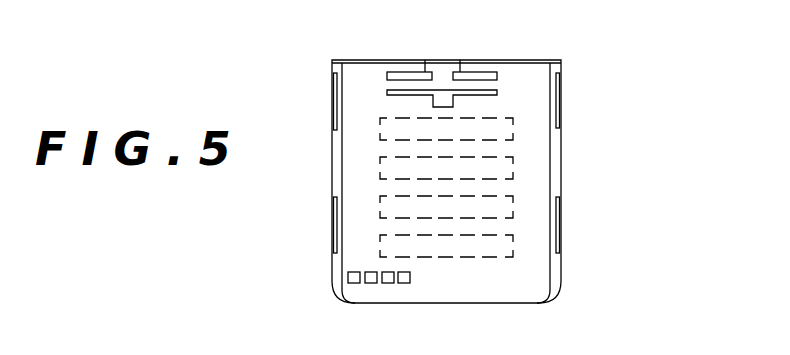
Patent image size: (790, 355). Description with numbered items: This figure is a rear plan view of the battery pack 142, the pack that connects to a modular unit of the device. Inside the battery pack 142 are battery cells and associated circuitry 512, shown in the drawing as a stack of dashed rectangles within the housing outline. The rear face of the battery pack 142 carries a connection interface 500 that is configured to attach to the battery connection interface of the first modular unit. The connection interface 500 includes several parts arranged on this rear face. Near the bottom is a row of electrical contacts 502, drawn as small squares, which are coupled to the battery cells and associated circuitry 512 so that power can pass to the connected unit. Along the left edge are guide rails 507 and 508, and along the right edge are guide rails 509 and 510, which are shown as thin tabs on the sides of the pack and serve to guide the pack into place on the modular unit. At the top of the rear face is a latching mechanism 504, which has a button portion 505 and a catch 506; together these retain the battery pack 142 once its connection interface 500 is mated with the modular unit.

The battery pack 142 is at (679, 27).
The connection interface 500 is at (505, 288).
The electrical contacts 502 is at (372, 296).
The latching mechanism 504 is at (451, 72).
The button portion 505 is at (440, 76).
The catch 506 is at (433, 103).
The guide rail 507 is at (333, 227).
The guide rail 508 is at (333, 103).
The guide rail 509 is at (558, 223).
The guide rail 510 is at (558, 101).
The battery cells and associated circuitry 512 is at (522, 167).